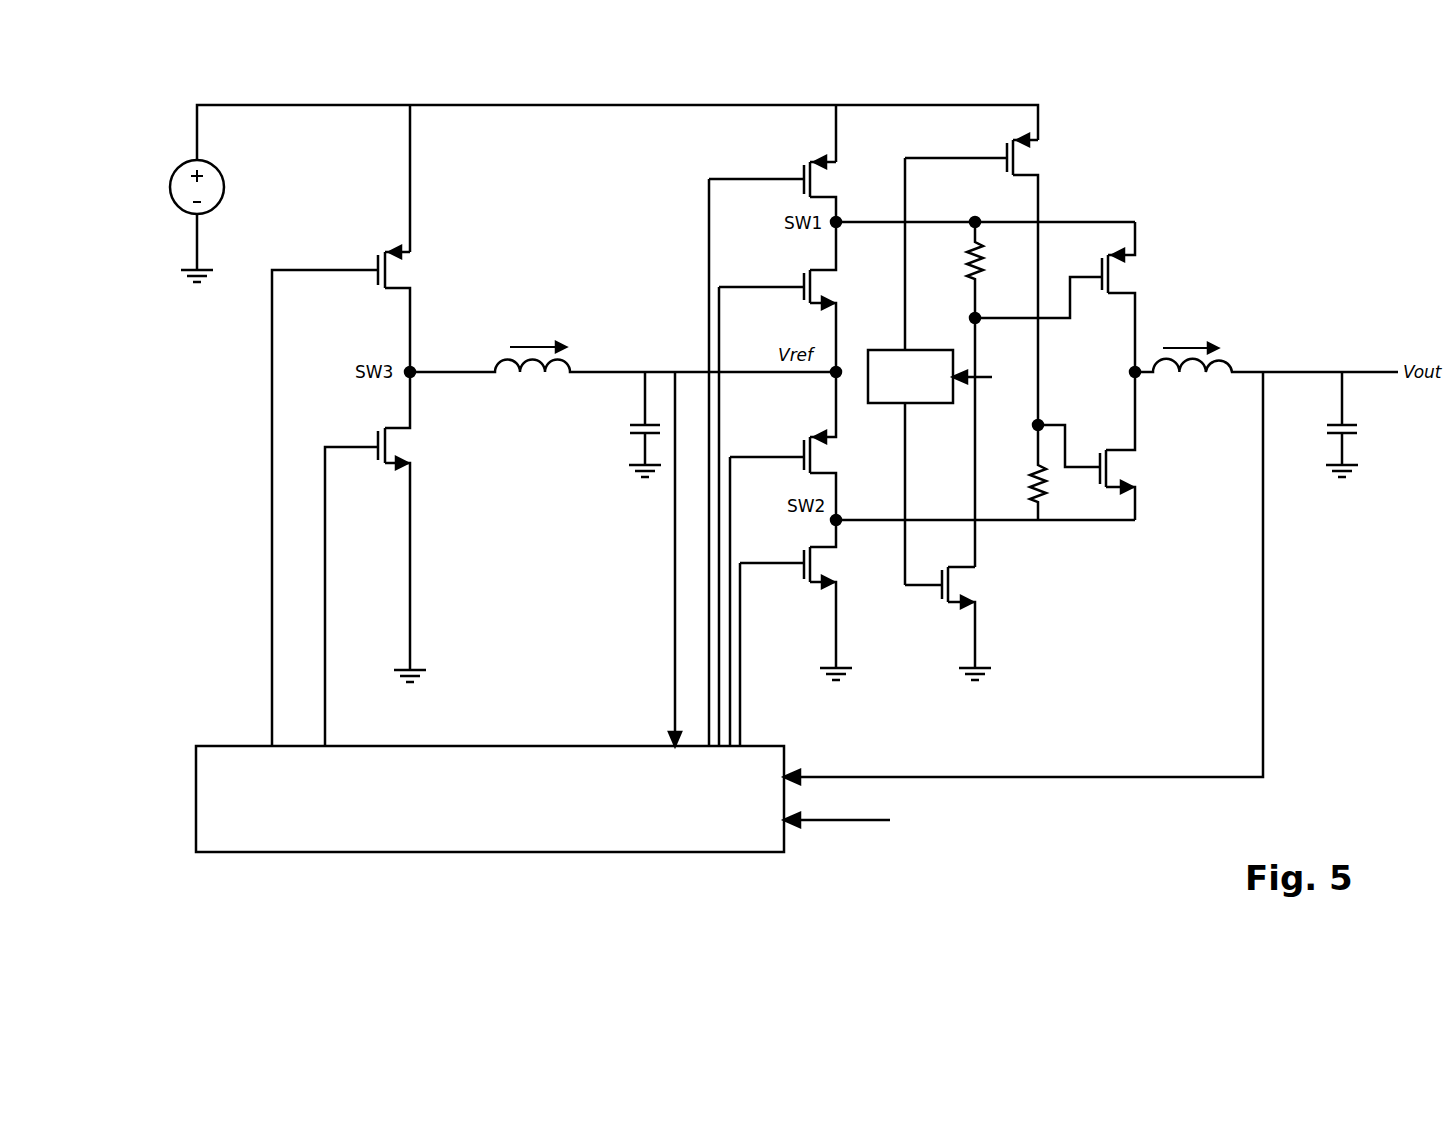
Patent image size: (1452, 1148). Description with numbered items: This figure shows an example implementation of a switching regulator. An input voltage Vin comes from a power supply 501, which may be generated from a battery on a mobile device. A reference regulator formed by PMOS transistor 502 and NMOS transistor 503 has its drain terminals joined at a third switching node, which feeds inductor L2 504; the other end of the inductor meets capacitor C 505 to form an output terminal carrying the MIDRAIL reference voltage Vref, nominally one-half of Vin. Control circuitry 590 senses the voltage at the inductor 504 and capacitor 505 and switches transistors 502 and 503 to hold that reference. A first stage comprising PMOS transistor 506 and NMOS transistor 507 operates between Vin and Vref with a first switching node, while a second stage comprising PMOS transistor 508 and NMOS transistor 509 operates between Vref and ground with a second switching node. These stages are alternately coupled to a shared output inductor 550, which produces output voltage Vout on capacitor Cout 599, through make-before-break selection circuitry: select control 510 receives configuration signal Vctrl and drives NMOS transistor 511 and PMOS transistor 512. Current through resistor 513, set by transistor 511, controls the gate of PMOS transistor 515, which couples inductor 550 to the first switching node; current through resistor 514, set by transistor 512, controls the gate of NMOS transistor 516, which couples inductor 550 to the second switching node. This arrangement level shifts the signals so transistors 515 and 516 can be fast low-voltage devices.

The power supply 501 is at (176, 221).
The PMOS transistor 502 is at (359, 496).
The NMOS transistor 503 is at (386, 559).
The inductor L2 504 is at (623, 369).
The capacitor C 505 is at (623, 424).
The PMOS transistor 506 is at (792, 189).
The NMOS transistor 507 is at (797, 297).
The PMOS transistor 508 is at (802, 446).
The NMOS transistor 509 is at (807, 600).
The select control 510 is at (936, 403).
The NMOS transistor 511 is at (958, 623).
The PMOS transistor 512 is at (990, 279).
The resistor 513 is at (955, 270).
The resistor 514 is at (1017, 472).
The PMOS transistor 515 is at (1137, 297).
The NMOS transistor 516 is at (1105, 446).
The shared output inductor 550 is at (1266, 370).
The control circuitry 590 is at (572, 799).
The capacitor Cout 599 is at (1362, 424).